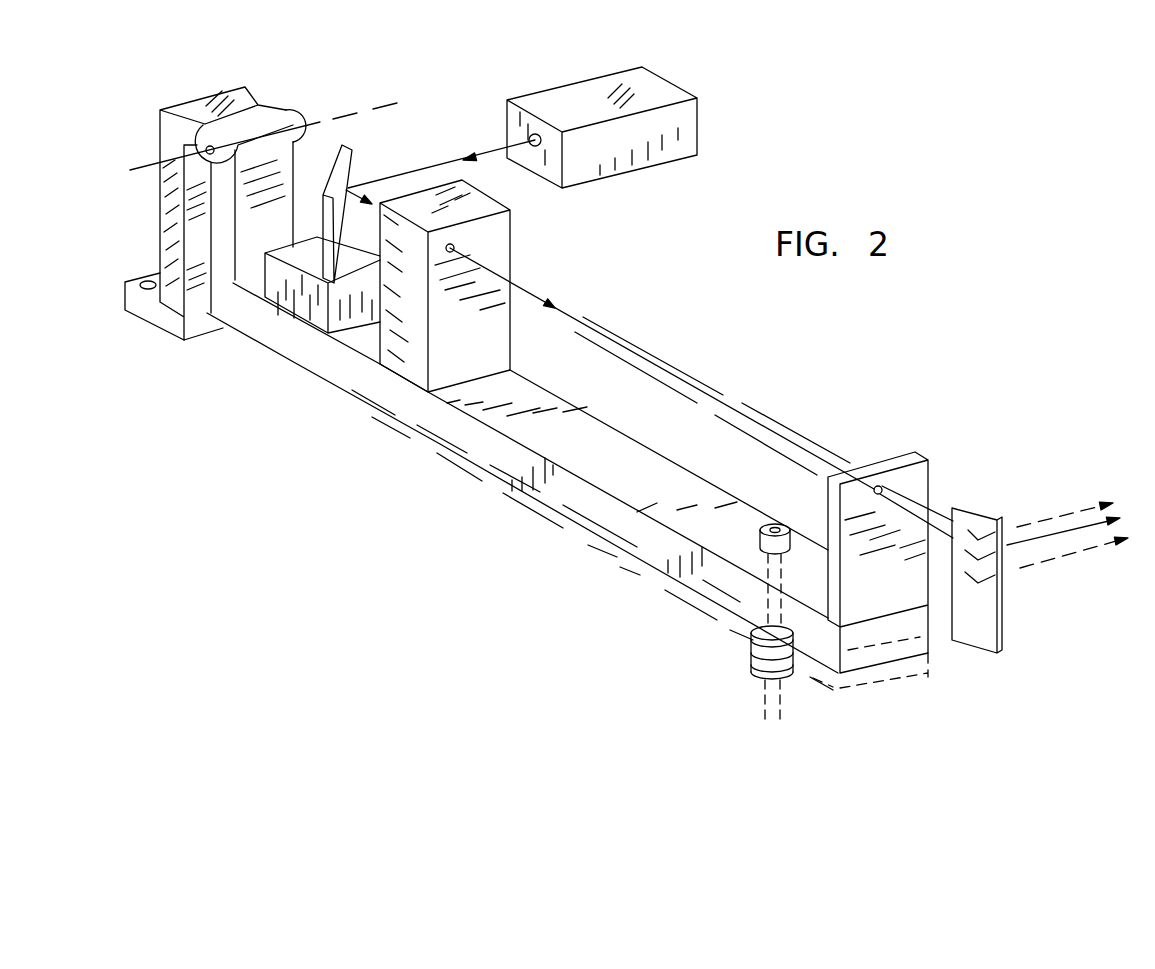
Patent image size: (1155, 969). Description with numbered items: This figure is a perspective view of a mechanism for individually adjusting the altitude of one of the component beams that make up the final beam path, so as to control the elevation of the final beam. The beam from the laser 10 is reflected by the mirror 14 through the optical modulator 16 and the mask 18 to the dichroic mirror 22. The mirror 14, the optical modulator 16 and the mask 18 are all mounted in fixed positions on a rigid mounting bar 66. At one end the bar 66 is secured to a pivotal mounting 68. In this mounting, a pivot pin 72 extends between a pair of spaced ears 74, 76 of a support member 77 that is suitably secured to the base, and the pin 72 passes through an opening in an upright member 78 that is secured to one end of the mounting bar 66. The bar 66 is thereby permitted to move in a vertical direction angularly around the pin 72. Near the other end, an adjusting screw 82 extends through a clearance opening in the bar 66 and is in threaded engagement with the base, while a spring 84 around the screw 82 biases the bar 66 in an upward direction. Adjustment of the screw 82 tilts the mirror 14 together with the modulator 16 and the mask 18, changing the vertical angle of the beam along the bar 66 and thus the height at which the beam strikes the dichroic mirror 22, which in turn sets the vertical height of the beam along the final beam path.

The laser 10 is at (650, 168).
The mirror 14 is at (355, 157).
The optical modulator 16 is at (510, 249).
The mask 18 is at (888, 460).
The dichroic mirror 22 is at (985, 508).
The mounting bar 66 is at (308, 376).
The pivotal mounting 68 is at (223, 198).
The pivot pin 72 is at (147, 163).
The ear 74 is at (205, 122).
The ear 76 is at (303, 106).
The support member 77 is at (158, 233).
The upright member 78 is at (262, 137).
The adjusting screw 82 is at (768, 592).
The spring 84 is at (752, 665).